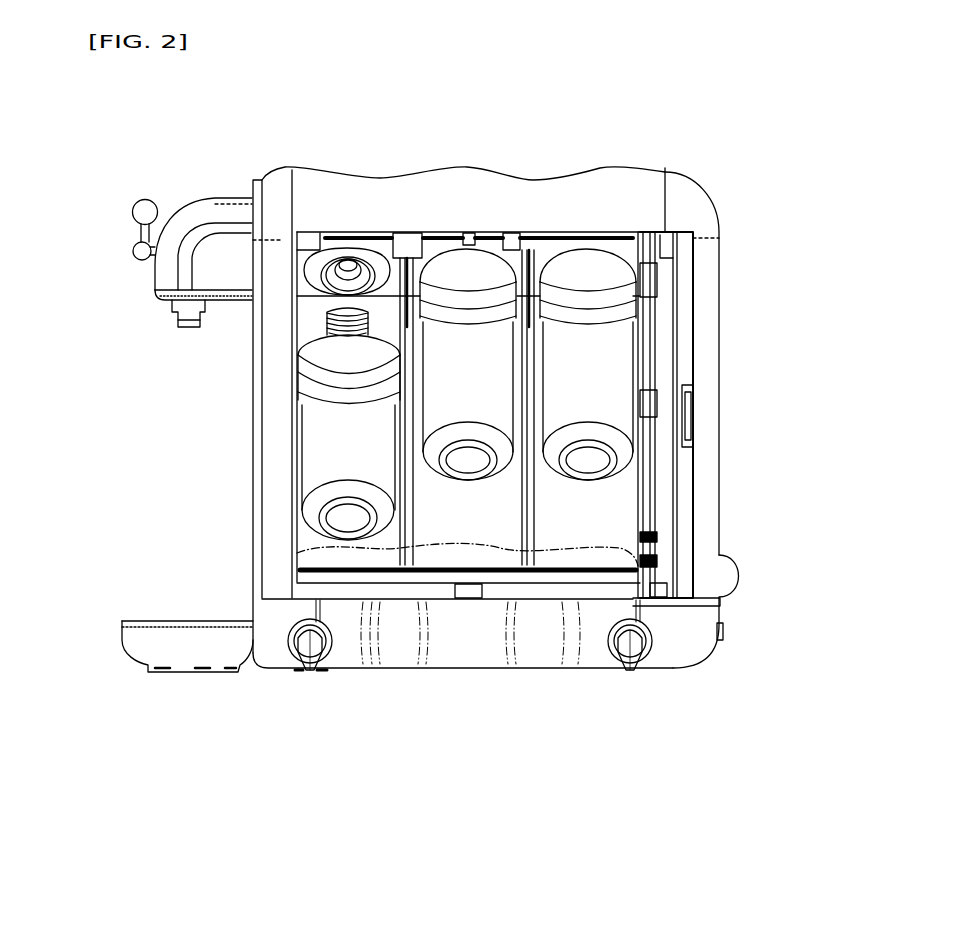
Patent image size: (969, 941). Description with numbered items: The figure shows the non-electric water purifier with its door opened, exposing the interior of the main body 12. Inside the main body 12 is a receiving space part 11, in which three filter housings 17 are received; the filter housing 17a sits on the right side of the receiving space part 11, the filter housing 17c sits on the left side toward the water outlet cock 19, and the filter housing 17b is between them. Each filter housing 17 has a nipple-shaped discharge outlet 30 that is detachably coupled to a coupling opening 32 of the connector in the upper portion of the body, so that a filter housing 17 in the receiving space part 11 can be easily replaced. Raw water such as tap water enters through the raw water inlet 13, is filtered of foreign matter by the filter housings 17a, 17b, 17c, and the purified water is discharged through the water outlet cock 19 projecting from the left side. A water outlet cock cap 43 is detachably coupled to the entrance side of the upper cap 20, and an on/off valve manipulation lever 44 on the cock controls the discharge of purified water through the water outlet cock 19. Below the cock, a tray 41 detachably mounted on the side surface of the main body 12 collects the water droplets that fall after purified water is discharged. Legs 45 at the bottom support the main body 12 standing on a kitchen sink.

The receiving space part 11 is at (615, 533).
The main body 12 is at (722, 345).
The raw water inlet 13 is at (721, 638).
The filter housing 17 is at (367, 752).
The filter housing 17a is at (575, 388).
The filter housing 17b is at (460, 385).
The filter housing 17c is at (353, 468).
The water outlet cock 19 is at (178, 322).
The upper cap 20 is at (437, 180).
The discharge outlet 30 is at (330, 315).
The coupling opening 32 is at (353, 276).
The tray 41 is at (187, 655).
The water outlet cock cap 43 is at (203, 212).
The on/off valve manipulation lever 44 is at (145, 199).
The legs 45 is at (633, 663).